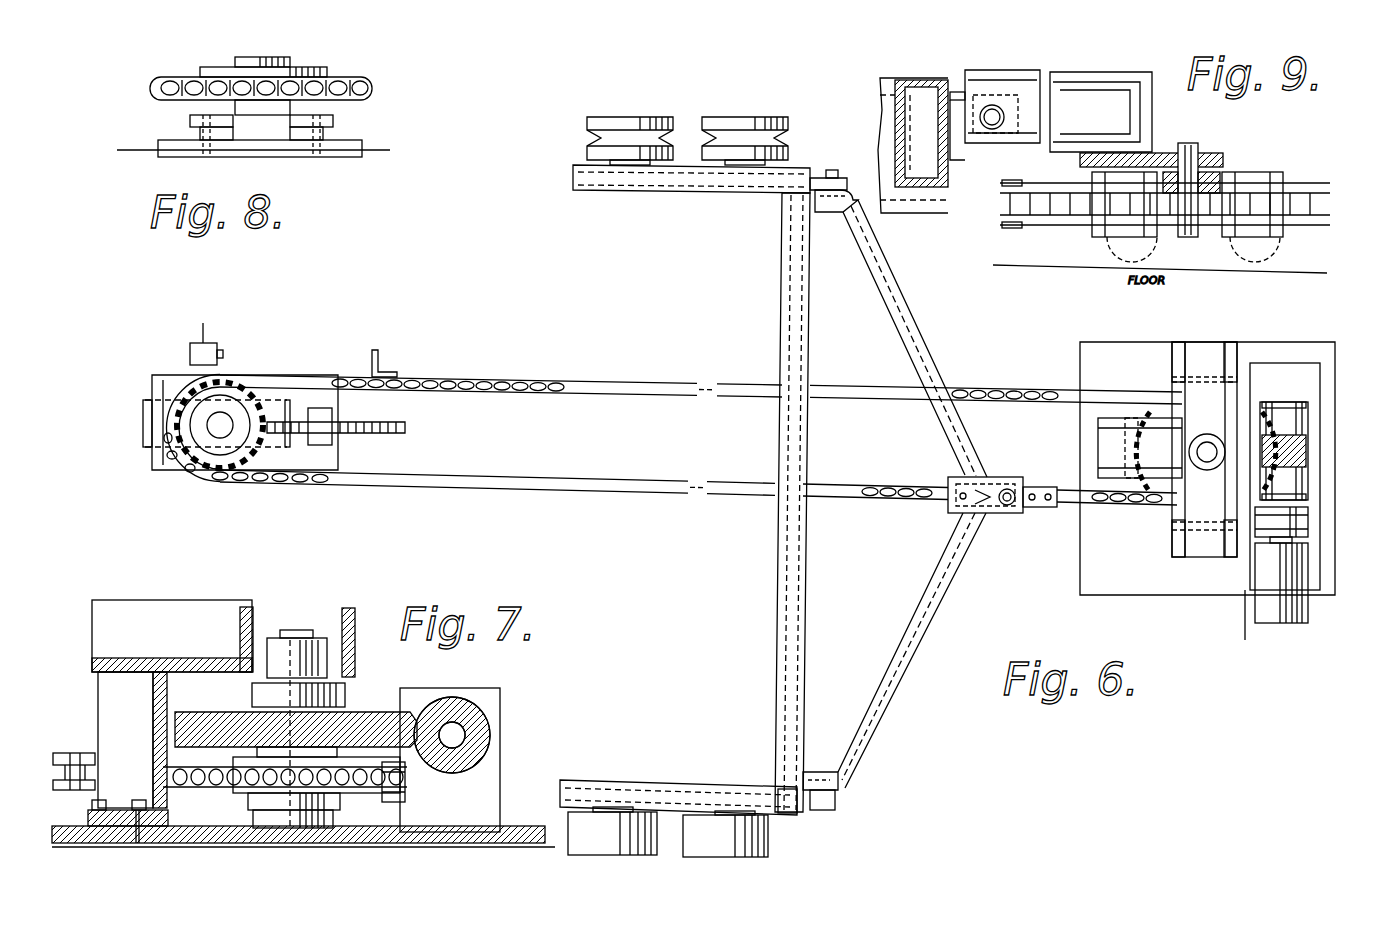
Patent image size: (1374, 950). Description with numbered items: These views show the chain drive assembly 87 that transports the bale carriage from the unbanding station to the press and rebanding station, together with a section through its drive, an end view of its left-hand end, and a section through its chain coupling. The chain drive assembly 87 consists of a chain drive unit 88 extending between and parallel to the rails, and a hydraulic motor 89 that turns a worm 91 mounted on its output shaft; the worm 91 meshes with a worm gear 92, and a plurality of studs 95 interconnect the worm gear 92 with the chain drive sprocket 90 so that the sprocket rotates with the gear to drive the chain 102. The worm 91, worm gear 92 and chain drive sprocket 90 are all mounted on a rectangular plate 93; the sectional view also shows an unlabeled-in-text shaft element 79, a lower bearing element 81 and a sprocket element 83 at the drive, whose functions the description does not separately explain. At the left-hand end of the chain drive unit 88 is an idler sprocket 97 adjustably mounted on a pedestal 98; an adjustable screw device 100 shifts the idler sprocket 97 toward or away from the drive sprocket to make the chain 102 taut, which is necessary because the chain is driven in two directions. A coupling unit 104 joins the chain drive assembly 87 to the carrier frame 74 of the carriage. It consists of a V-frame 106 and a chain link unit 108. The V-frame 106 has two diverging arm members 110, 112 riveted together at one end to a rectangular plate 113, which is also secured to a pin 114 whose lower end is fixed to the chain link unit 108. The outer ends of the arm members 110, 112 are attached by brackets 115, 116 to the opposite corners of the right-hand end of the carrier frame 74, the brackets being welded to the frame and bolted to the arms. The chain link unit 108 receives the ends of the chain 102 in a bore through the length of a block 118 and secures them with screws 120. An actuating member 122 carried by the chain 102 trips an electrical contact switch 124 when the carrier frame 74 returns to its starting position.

In FIG. 9, the carrier frame 74 is at (916, 78).
In FIG. 6, the carrier frame 74 is at (790, 289).
In FIG. 7, the vertical shaft 79 is at (298, 630).
In FIG. 7, the bearing block 81 is at (237, 784).
In FIG. 6, the drive sprocket 83 is at (1243, 418).
In FIG. 7, the drive sprocket 83 is at (358, 712).
In FIG. 6, the chain drive assembly 87 is at (1057, 534).
In FIG. 7, the chain drive assembly 87 is at (514, 686).
In FIG. 6, the chain drive unit 88 is at (598, 491).
In FIG. 6, the hydraulic motor 89 is at (1283, 628).
In FIG. 6, the chain drive sprocket 90 is at (660, 810).
In FIG. 6, the worm 91 is at (1262, 458).
In FIG. 7, the worm 91 is at (490, 733).
In FIG. 6, the worm gear 92 is at (635, 118).
In FIG. 6, the rectangular plate 93 is at (1157, 588).
In FIG. 7, the rectangular plate 93 is at (508, 836).
In FIG. 7, the studs 95 is at (252, 737).
In FIG. 8, the idler sprocket 97 is at (353, 80).
In FIG. 6, the idler sprocket 97 is at (254, 386).
In FIG. 8, the pedestal 98 is at (352, 154).
In FIG. 6, the pedestal 98 is at (168, 470).
In FIG. 6, the adjustable screw device 100 is at (322, 404).
In FIG. 9, the chain 102 is at (1048, 226).
In FIG. 6, the chain 102 is at (517, 378).
In FIG. 7, the chain 102 is at (80, 753).
In FIG. 6, the coupling unit 104 is at (997, 469).
In FIG. 6, the V-frame 106 is at (956, 379).
In FIG. 9, the chain link unit 108 is at (1255, 164).
In FIG. 6, the chain link unit 108 is at (944, 512).
In FIG. 9, the arm member 110 is at (1068, 72).
In FIG. 6, the arm member 110 is at (907, 338).
In FIG. 6, the arm member 112 is at (907, 623).
In FIG. 9, the rectangular plate 113 is at (1160, 153).
In FIG. 6, the rectangular plate 113 is at (1024, 516).
In FIG. 9, the pin 114 is at (1200, 150).
In FIG. 6, the pin 114 is at (1008, 504).
In FIG. 9, the bracket 115 is at (955, 92).
In FIG. 6, the bracket 115 is at (844, 176).
In FIG. 6, the bracket 116 is at (834, 800).
In FIG. 9, the block 118 is at (1262, 182).
In FIG. 9, the screws 120 is at (1128, 240).
In FIG. 6, the actuating member 122 is at (378, 352).
In FIG. 6, the electrical contact switch 124 is at (193, 334).